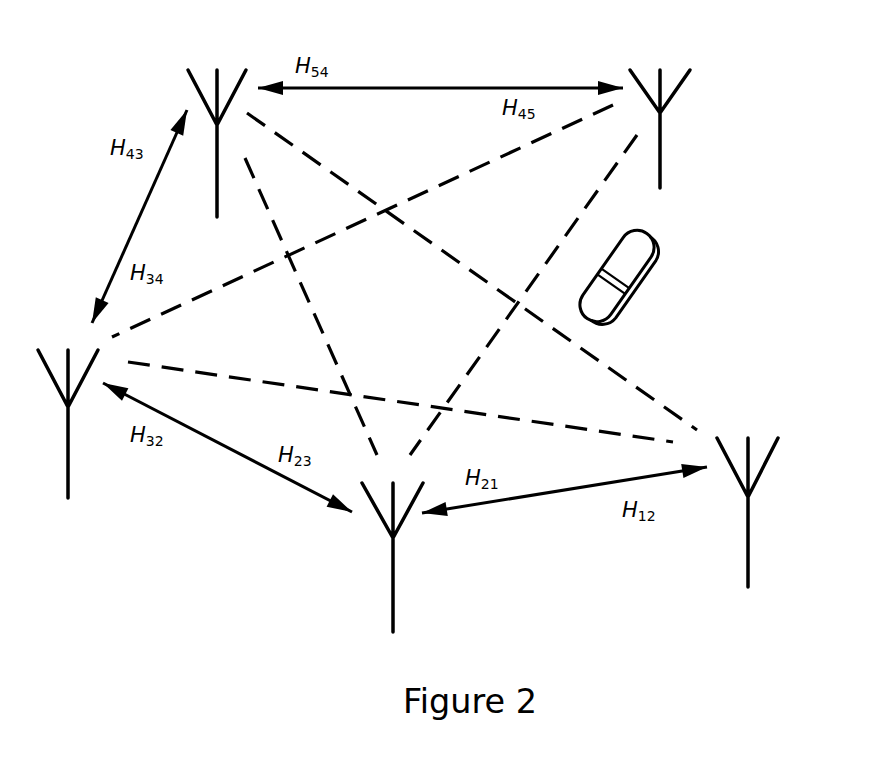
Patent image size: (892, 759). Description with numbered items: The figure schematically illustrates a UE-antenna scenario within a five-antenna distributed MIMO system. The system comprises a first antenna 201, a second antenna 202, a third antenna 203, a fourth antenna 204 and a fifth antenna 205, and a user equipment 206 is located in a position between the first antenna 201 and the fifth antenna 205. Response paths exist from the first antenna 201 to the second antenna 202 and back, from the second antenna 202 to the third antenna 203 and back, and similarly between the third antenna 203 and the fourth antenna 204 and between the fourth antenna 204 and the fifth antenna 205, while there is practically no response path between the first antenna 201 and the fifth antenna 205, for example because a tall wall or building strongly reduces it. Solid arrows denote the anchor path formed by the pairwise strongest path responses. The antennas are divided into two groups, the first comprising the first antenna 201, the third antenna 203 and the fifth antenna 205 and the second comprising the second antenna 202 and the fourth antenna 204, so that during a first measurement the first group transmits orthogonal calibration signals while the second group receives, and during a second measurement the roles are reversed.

The antenna 1 201 is at (782, 537).
The antenna 2 202 is at (393, 615).
The antenna 3 203 is at (68, 480).
The antenna 4 204 is at (188, 72).
The antenna 5 205 is at (660, 172).
The user equipment 206 is at (675, 252).